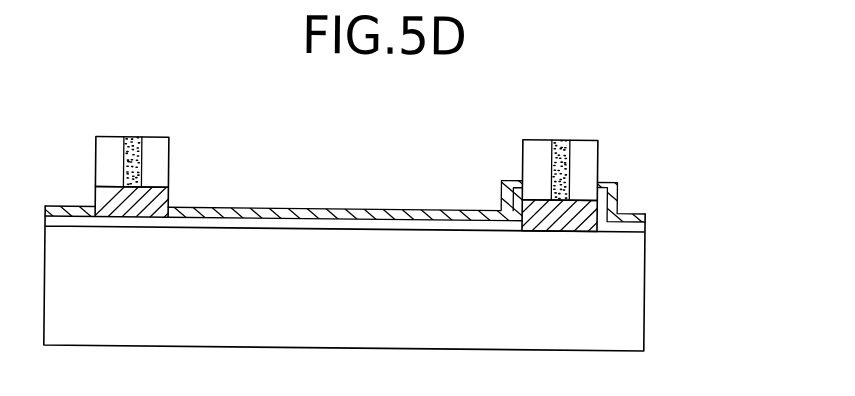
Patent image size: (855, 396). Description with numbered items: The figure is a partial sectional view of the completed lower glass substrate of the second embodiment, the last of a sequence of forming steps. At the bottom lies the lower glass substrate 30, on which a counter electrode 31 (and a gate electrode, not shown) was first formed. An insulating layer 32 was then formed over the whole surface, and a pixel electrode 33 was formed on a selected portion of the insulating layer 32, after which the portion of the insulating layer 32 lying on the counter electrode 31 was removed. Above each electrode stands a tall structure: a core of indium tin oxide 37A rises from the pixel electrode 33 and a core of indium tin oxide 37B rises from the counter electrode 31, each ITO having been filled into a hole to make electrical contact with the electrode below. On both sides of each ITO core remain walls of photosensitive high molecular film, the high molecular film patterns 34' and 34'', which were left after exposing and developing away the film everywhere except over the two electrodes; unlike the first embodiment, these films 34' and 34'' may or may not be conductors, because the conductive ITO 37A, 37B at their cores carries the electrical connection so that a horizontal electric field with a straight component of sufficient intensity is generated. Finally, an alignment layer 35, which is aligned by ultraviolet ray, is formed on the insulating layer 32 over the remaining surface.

The lower glass substrate 30 is at (640, 291).
The counter electrode 31 is at (562, 226).
The insulating layer 32 is at (640, 219).
The pixel electrode 33 is at (126, 213).
The high molecular wall 34' is at (158, 128).
The high molecular wall 34'' is at (590, 136).
The alignment layer 35 is at (362, 207).
The indium tin oxide (ITO) 37A is at (135, 141).
The indium tin oxide (ITO) 37B is at (565, 137).